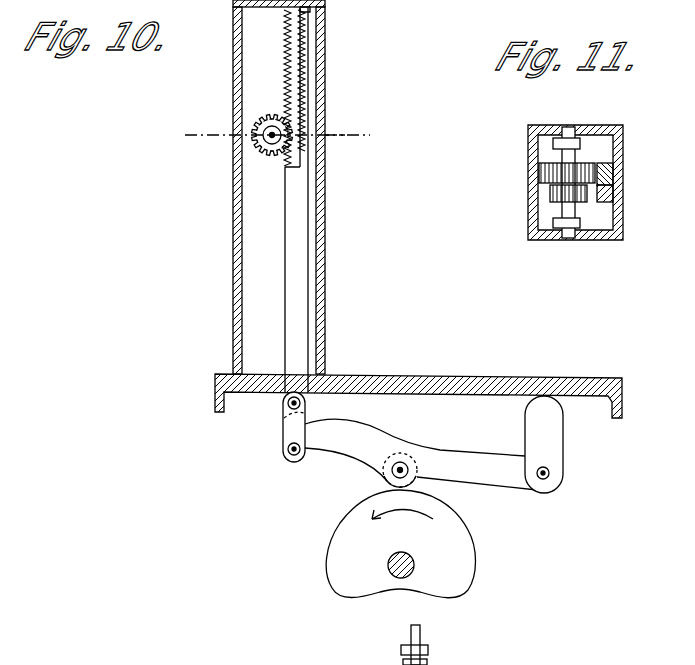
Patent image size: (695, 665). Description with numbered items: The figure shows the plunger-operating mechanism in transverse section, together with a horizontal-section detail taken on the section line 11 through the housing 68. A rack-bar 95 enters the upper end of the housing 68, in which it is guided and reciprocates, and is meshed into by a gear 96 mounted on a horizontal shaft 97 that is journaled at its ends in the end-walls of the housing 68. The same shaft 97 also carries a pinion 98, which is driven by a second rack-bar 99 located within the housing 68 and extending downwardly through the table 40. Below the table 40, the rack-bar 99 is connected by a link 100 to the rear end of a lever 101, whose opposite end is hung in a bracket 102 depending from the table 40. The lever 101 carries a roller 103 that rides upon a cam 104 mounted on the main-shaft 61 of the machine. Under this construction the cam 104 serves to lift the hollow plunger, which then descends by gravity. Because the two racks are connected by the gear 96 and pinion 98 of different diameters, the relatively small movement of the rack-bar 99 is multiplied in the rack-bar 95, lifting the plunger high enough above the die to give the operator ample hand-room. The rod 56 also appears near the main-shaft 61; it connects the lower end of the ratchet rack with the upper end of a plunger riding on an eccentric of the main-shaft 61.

In FIG. 10, the section line 11— 11 is at (283, 138).
In FIG. 10, the table 40 is at (482, 376).
In FIG. 10, the rod 56 is at (420, 637).
In FIG. 10, the main-shaft 61 is at (410, 562).
In FIG. 10, the housing 68 is at (234, 222).
In FIG. 11, the housing 68 is at (541, 240).
In FIG. 11, the rack-bar 95 is at (610, 173).
In FIG. 10, the gear 96 is at (259, 160).
In FIG. 11, the gear 96 is at (545, 172).
In FIG. 10, the horizontal shaft 97 is at (271, 128).
In FIG. 11, the horizontal shaft 97 is at (560, 212).
In FIG. 10, the pinion 98 is at (257, 148).
In FIG. 11, the pinion 98 is at (548, 195).
In FIG. 10, the rack-bar 99 is at (288, 260).
In FIG. 11, the rack-bar 99 is at (612, 195).
In FIG. 10, the link 100 is at (283, 426).
In FIG. 10, the lever 101 is at (398, 432).
In FIG. 10, the bracket 102 is at (552, 438).
In FIG. 10, the roller 103 is at (385, 478).
In FIG. 10, the cam 104 is at (463, 557).